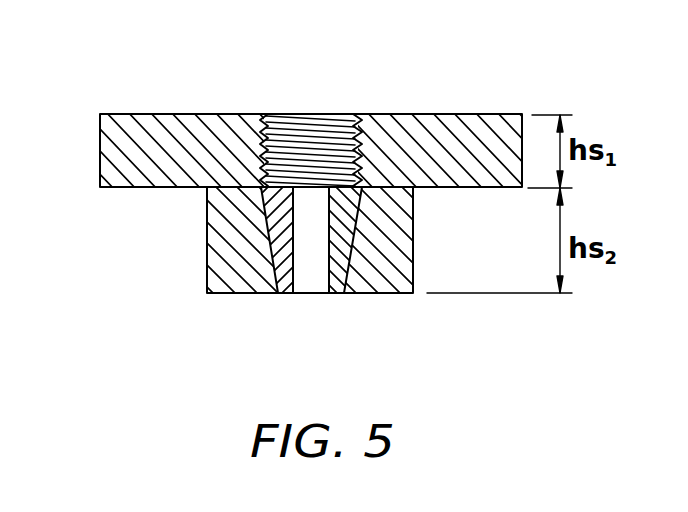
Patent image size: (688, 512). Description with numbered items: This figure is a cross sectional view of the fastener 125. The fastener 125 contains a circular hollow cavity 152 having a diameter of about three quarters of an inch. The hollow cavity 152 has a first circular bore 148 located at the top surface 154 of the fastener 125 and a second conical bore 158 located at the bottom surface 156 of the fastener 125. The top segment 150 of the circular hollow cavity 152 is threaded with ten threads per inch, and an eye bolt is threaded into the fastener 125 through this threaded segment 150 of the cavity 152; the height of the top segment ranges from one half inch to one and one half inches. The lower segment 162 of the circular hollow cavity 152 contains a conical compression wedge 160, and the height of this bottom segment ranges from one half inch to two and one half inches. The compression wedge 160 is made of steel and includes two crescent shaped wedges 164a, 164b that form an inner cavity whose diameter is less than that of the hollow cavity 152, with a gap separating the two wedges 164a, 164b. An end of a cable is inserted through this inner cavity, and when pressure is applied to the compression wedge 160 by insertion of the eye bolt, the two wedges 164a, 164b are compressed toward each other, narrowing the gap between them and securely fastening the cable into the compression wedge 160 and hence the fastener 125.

The fastener 125 is at (120, 36).
The first circular bore 148 is at (270, 113).
The top segment 150 is at (370, 135).
The circular hollow cavity 152 is at (277, 222).
The top surface 154 is at (130, 113).
The bottom surface 156 is at (372, 293).
The second conical bore 158 is at (277, 293).
The conical compression wedge 160 is at (345, 223).
The lower segment 162 is at (372, 248).
The crescent shaped wedge 164a is at (283, 286).
The crescent shaped wedge 164b is at (335, 287).